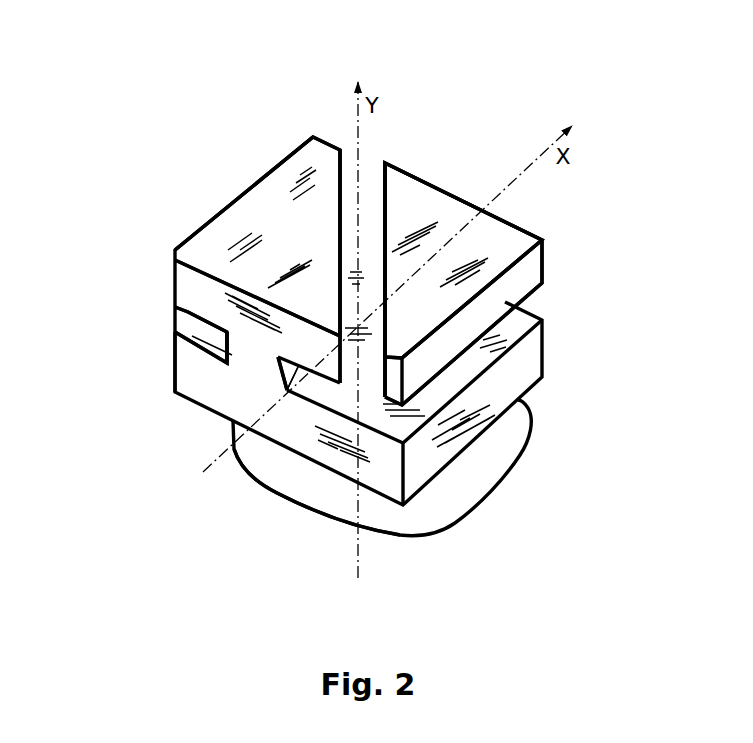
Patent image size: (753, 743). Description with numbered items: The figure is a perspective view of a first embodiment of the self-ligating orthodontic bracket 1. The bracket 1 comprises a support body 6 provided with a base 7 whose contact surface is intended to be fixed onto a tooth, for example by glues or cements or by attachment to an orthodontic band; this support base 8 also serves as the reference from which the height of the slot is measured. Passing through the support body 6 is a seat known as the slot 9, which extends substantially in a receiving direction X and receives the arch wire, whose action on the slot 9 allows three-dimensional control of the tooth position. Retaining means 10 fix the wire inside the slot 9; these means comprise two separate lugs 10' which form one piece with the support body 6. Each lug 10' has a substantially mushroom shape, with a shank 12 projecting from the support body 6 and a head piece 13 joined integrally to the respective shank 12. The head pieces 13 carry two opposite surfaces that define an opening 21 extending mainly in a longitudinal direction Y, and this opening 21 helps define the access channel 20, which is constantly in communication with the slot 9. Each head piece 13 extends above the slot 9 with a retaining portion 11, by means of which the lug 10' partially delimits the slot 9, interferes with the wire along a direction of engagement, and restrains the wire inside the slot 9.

The self-ligating orthodontic bracket 1 is at (502, 148).
The support body 6 is at (570, 338).
The base 7 is at (493, 457).
The support base 8 is at (276, 494).
The slot 9 is at (316, 387).
The retaining means 10 is at (542, 284).
The lug 10' is at (298, 216).
The retaining portion 11 is at (327, 313).
The shank 12 is at (175, 331).
The head piece 13 is at (190, 252).
The access channel 20 is at (372, 372).
The opening 21 is at (347, 136).